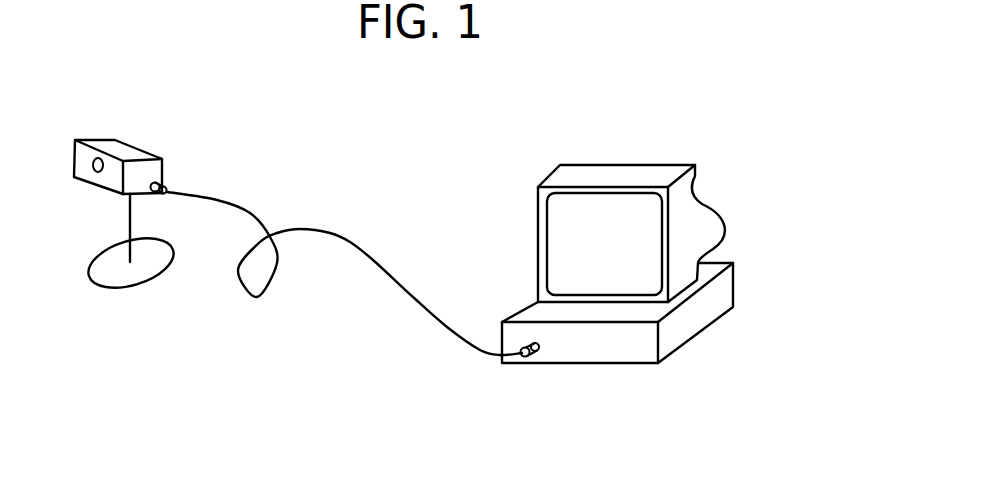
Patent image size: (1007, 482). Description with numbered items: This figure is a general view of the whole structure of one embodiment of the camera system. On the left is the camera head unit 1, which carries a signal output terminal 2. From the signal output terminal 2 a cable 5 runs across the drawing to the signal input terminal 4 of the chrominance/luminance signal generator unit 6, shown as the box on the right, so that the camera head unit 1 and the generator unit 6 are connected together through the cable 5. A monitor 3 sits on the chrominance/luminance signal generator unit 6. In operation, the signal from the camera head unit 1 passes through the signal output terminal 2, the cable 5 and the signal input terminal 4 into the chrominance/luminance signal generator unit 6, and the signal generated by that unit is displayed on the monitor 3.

The camera head unit 1 is at (127, 143).
The signal output terminal 2 is at (167, 182).
The monitor 3 is at (703, 207).
The signal input terminal 4 is at (542, 352).
The cable 5 is at (373, 260).
The chrominance/luminance signal generator unit 6 is at (623, 350).